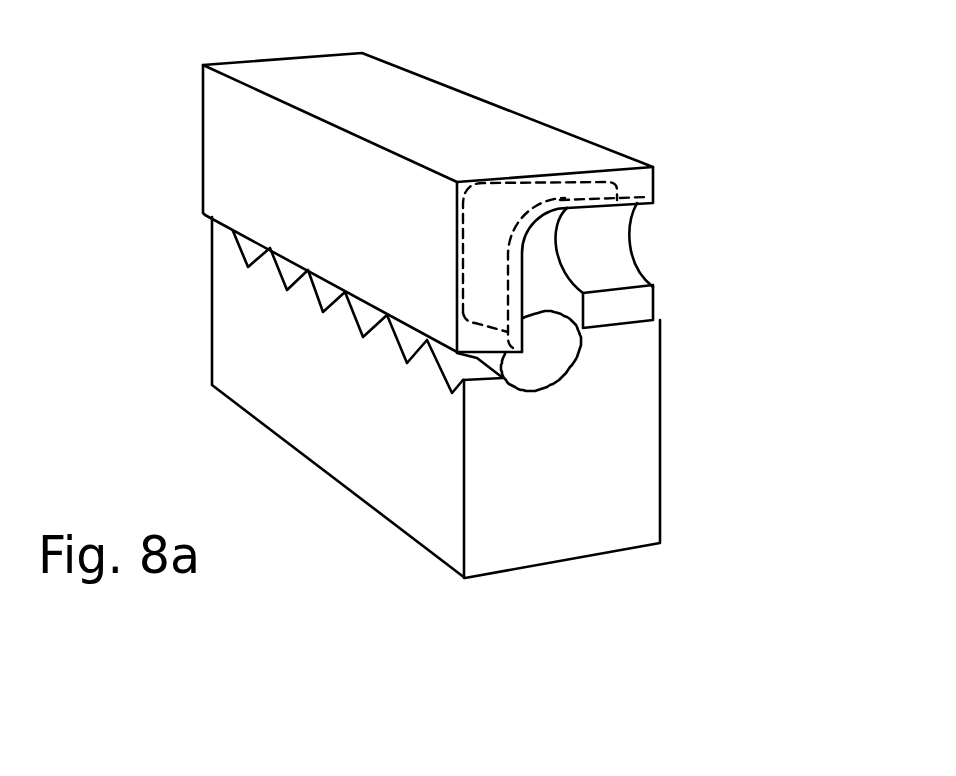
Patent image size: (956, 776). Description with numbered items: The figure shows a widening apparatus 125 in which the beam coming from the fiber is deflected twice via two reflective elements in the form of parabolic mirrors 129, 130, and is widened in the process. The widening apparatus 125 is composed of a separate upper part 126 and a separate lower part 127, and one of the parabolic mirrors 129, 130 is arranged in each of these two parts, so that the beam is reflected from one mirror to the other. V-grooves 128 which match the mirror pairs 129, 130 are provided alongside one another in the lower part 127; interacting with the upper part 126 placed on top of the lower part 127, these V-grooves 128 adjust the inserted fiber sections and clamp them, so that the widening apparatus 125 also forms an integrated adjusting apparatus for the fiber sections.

The widening apparatus 125 is at (684, 151).
The upper part 126 is at (240, 150).
The lower part 127 is at (338, 440).
The V-grooves 128 is at (328, 295).
The parabolic mirror 129 is at (532, 200).
The parabolic mirror 130 is at (540, 357).